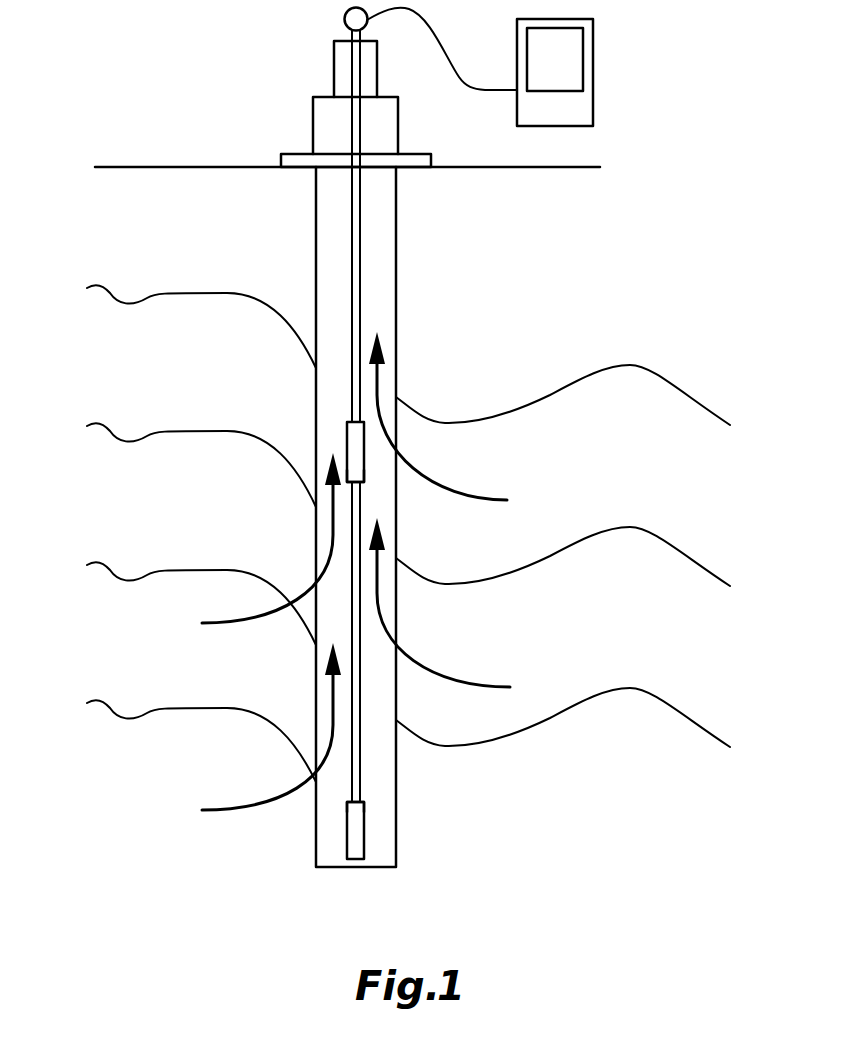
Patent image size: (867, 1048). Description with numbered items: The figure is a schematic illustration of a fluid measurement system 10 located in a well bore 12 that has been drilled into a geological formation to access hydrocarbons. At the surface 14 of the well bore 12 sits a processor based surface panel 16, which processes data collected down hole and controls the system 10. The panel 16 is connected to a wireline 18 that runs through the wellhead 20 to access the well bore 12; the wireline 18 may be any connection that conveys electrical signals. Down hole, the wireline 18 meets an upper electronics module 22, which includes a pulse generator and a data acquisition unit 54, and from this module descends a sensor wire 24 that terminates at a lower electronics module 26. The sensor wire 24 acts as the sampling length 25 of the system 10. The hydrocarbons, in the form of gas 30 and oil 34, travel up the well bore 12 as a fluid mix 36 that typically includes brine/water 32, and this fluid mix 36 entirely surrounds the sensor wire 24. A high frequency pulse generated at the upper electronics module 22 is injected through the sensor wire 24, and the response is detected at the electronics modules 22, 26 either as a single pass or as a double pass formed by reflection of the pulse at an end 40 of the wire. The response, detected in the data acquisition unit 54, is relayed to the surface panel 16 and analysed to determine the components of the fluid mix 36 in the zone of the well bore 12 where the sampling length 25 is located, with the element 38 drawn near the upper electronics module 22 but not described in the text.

The fluid measurement system 10 is at (220, 258).
The well bore 12 is at (396, 213).
The surface 14 is at (197, 165).
The surface panel 16 is at (568, 57).
The wireline 18 is at (361, 267).
The wellhead 20 is at (312, 121).
The upper electronics module 22 is at (364, 463).
The sensor wire 24 is at (355, 702).
The sampling length 25 is at (361, 663).
The lower electronics module 26 is at (358, 832).
The gas 30 is at (107, 810).
The brine/water 32 is at (107, 665).
The oil 34 is at (107, 518).
The fluid mix 36 is at (387, 312).
The sensor 38 is at (364, 483).
The end of the wire 40 is at (365, 798).
The data acquisition unit 54 is at (593, 92).